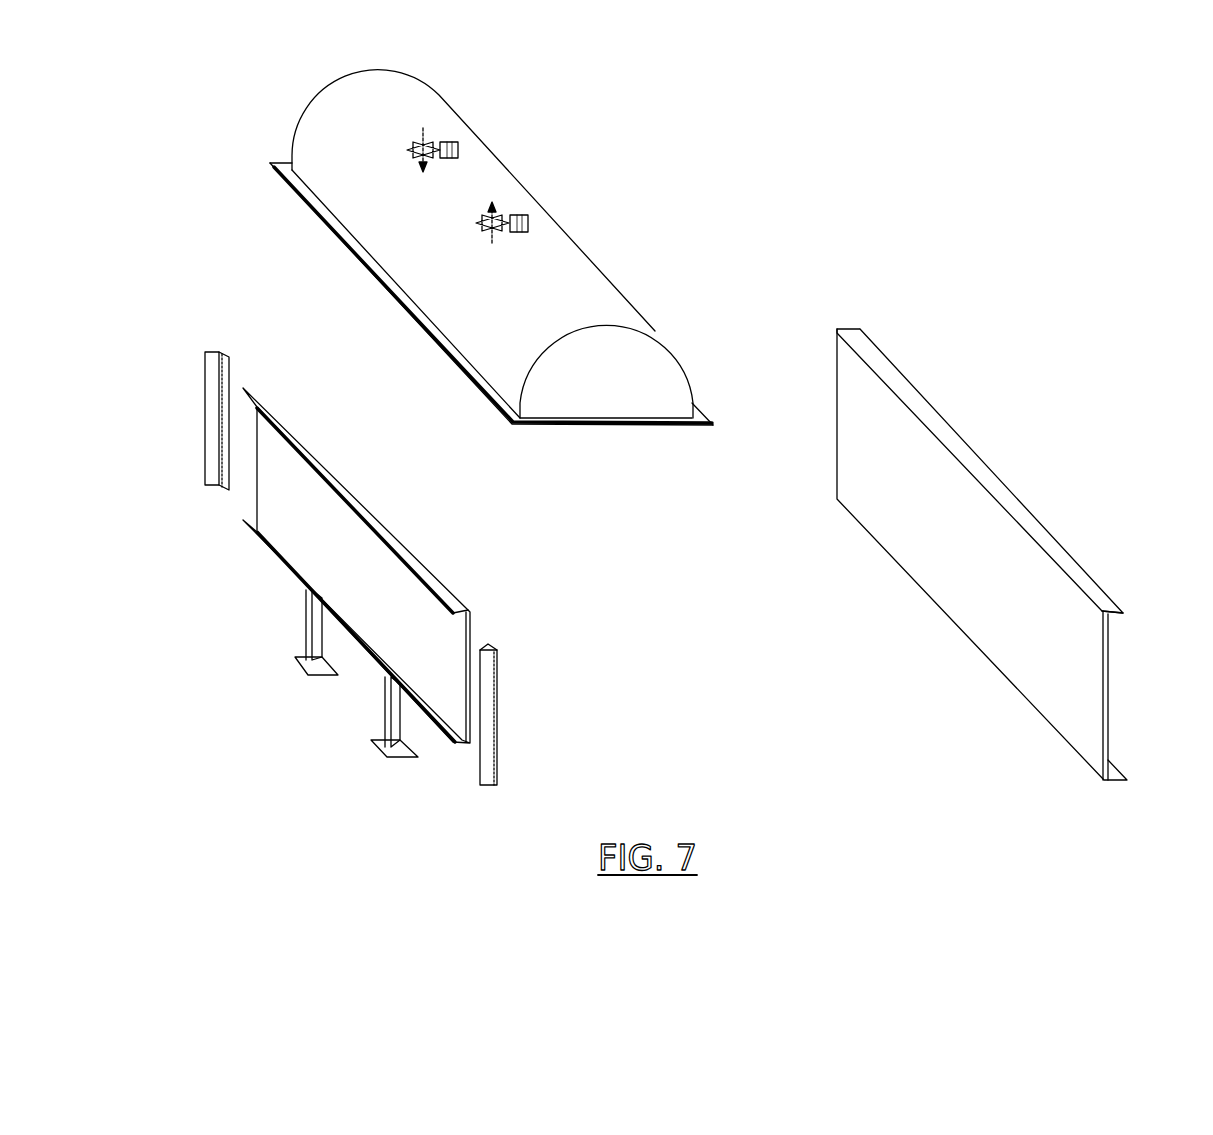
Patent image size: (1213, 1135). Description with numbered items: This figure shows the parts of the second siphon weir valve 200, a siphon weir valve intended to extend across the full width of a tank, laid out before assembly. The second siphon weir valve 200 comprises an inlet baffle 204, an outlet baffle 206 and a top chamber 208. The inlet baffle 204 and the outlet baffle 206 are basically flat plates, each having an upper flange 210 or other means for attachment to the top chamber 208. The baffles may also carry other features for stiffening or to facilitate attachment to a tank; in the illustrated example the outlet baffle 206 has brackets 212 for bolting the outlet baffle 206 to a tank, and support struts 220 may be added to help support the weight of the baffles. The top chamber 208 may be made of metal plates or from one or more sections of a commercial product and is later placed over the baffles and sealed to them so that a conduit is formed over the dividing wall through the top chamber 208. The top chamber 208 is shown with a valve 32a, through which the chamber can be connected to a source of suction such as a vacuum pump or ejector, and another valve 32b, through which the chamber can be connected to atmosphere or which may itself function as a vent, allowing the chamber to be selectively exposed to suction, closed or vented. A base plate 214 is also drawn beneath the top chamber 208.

The second siphon weir valve 200 is at (666, 431).
The inlet baffle 204 is at (967, 622).
The outlet baffle 206 is at (453, 638).
The top chamber 208 is at (578, 273).
The upper flange 210 is at (393, 297).
The brackets 212 is at (492, 702).
The base plate 214 is at (633, 398).
The support struts 220 is at (385, 718).
The valve 32a is at (433, 137).
The valve 32b is at (500, 208).